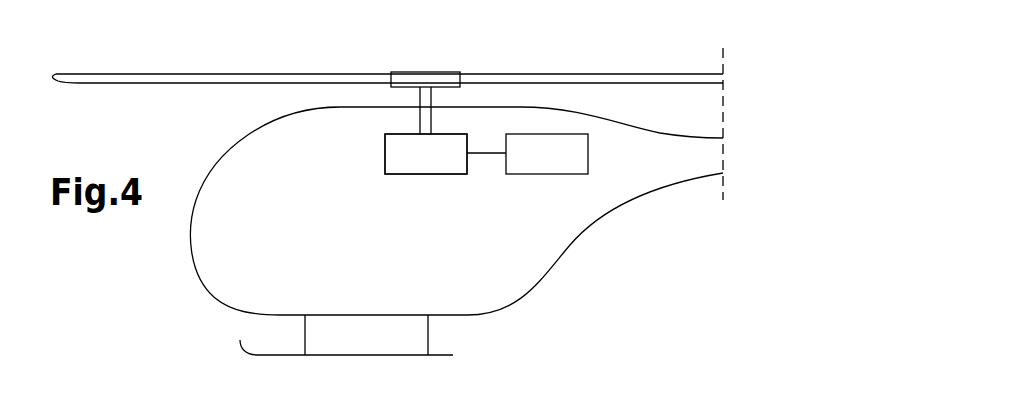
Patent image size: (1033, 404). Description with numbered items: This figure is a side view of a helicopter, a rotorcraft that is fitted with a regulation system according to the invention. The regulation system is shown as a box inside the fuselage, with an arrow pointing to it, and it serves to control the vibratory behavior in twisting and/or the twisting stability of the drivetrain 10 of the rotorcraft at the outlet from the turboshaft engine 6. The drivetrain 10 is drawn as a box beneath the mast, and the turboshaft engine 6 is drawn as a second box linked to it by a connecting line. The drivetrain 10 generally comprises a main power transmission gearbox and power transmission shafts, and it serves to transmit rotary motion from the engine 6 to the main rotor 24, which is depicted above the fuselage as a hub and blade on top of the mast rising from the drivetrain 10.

The main rotor 24 is at (443, 63).
The drivetrain 10 is at (425, 163).
The turboshaft engine 6 is at (535, 163).